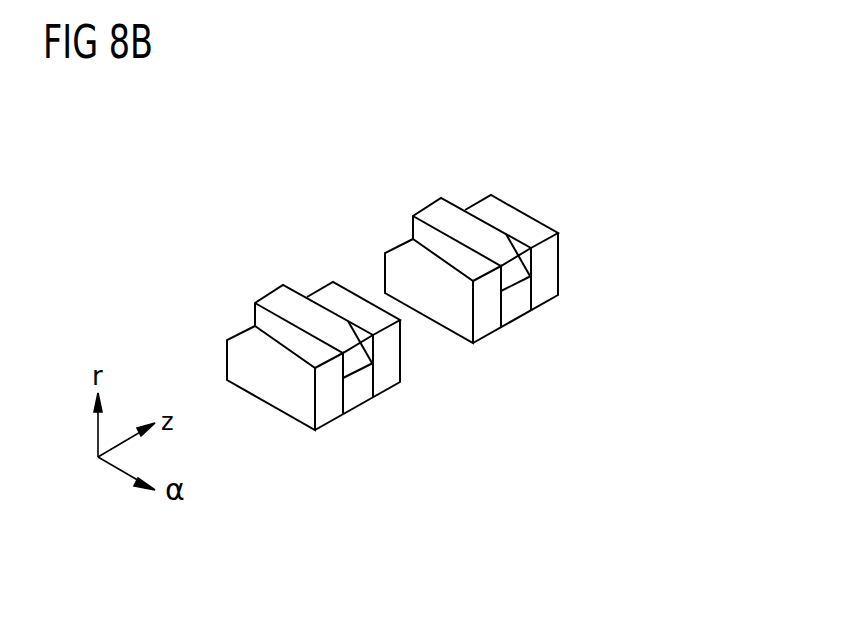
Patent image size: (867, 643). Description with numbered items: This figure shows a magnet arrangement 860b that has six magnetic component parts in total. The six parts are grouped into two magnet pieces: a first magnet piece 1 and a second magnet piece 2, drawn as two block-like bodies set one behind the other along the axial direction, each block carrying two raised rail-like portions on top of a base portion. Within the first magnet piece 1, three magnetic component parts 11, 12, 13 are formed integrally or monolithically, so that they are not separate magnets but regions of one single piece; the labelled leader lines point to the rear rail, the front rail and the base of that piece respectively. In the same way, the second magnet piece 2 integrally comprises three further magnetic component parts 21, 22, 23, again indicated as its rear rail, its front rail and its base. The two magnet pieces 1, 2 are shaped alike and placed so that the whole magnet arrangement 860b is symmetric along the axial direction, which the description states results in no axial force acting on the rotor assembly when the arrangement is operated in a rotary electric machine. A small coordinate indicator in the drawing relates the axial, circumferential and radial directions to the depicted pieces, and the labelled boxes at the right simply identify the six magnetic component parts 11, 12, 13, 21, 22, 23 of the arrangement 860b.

The magnet arrangement 860b is at (351, 160).
The first magnet segment 1 is at (581, 246).
The second magnet segment 2 is at (502, 430).
The first sub-segment of first magnet segment 11 is at (517, 218).
The second sub-segment of first magnet segment 12 is at (472, 232).
The third sub-segment of first magnet segment 13 is at (477, 262).
The first sub-segment of second magnet segment 21 is at (365, 315).
The second sub-segment of second magnet segment 22 is at (313, 320).
The third sub-segment of second magnet segment 23 is at (308, 350).